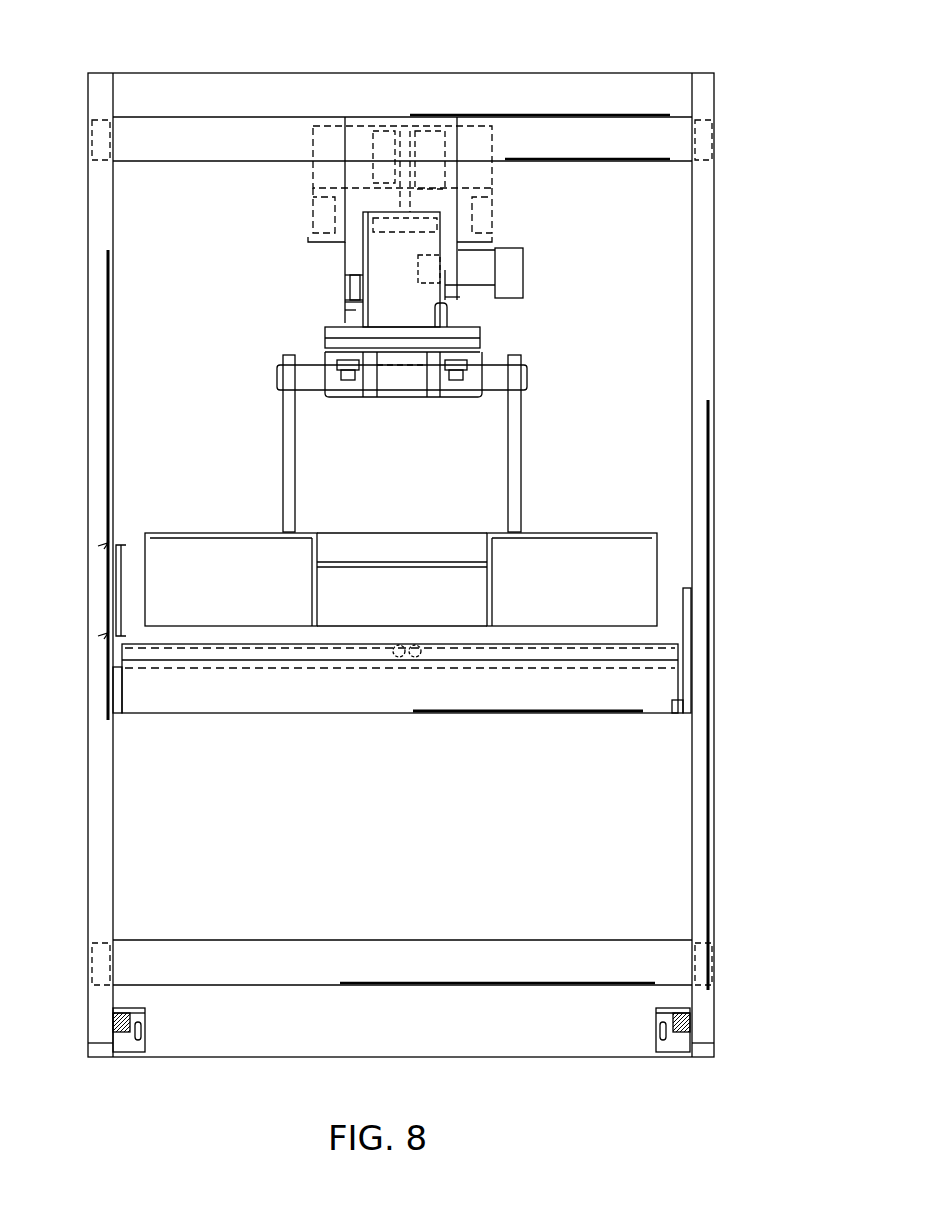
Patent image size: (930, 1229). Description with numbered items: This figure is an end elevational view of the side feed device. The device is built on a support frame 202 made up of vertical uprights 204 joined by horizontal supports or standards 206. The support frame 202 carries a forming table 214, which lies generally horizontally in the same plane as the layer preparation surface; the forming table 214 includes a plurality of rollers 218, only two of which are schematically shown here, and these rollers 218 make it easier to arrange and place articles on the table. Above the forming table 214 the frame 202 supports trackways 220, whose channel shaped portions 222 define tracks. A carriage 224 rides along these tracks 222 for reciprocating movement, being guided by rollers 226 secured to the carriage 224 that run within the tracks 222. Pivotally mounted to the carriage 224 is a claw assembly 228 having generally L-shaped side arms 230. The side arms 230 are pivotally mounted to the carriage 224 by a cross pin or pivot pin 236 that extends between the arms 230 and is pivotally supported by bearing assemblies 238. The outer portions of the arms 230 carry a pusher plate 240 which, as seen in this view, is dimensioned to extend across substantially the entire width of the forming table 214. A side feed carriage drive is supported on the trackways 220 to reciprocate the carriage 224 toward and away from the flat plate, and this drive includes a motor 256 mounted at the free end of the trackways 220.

The support frame 202 is at (743, 167).
The vertical uprights 204 is at (88, 330).
The horizontal supports or standards 206 is at (222, 128).
The forming table 214 is at (532, 742).
The rollers 218 is at (413, 659).
The trackways 220 is at (446, 247).
The channel shaped portions 222 is at (347, 272).
The carriage 224 is at (410, 312).
The rollers 226 is at (462, 283).
The claw assembly 228 is at (537, 502).
The side arms 230 is at (528, 446).
The pivot pin 236 is at (495, 380).
The bearing assemblies 238 is at (447, 392).
The pusher plate 240 is at (240, 555).
The motor 256 is at (510, 252).